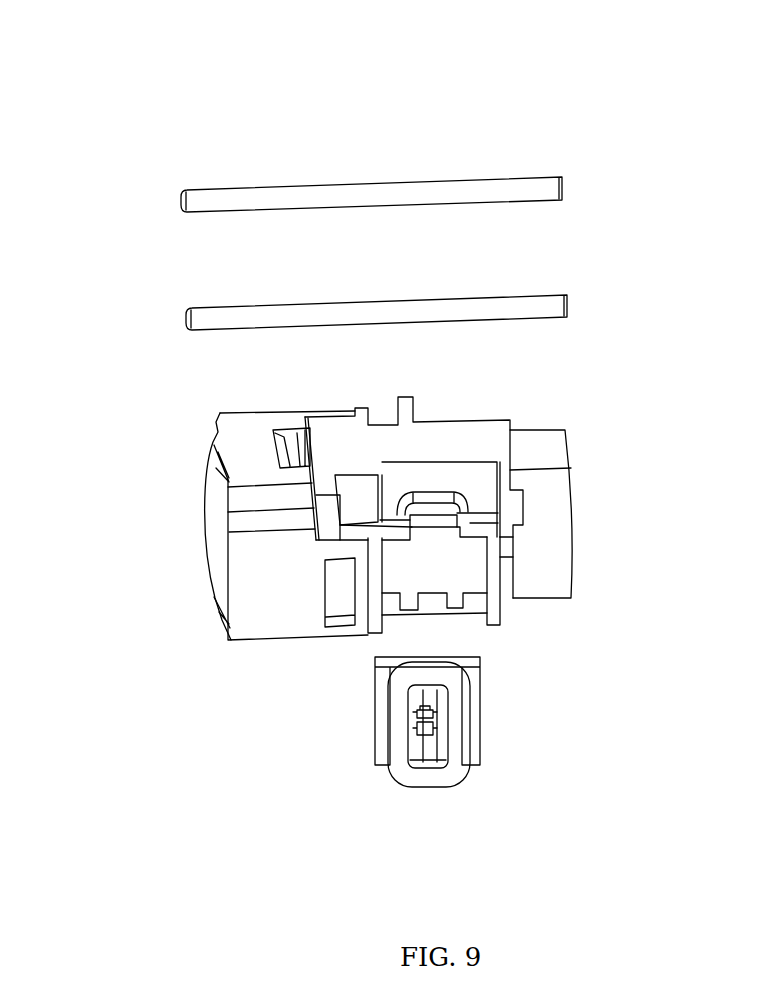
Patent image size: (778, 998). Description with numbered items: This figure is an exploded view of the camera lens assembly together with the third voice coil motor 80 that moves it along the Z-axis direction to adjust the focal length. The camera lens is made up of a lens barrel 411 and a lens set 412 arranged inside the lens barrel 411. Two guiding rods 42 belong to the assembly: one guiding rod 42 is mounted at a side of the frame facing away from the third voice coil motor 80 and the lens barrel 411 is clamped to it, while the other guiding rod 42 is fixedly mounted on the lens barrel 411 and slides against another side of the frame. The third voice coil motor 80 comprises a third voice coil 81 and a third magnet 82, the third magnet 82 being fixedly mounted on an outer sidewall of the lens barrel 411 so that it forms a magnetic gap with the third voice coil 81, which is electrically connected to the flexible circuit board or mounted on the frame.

The guiding rod 42 is at (443, 193).
The lens barrel 411 is at (551, 521).
The lens set 412 is at (215, 534).
The third voice coil motor 80 is at (514, 727).
The third voice coil 81 is at (455, 688).
The third magnet 82 is at (428, 726).